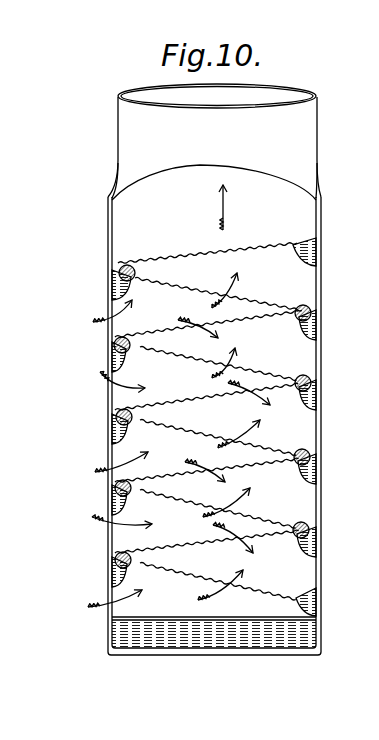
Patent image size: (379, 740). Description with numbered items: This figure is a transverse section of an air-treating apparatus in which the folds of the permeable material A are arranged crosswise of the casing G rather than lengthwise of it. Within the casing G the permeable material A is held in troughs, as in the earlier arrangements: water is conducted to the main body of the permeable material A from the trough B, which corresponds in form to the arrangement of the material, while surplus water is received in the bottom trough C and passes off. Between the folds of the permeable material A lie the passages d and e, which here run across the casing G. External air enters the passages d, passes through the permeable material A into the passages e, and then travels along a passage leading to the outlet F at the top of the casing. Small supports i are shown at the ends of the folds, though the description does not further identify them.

The outlet F is at (214, 157).
The casing G is at (110, 385).
The bottom trough C is at (115, 638).
The trough B is at (112, 288).
The baffle support rods i is at (120, 270).
The permeable material A is at (252, 246).
The passages d is at (179, 450).
The passages e is at (238, 433).